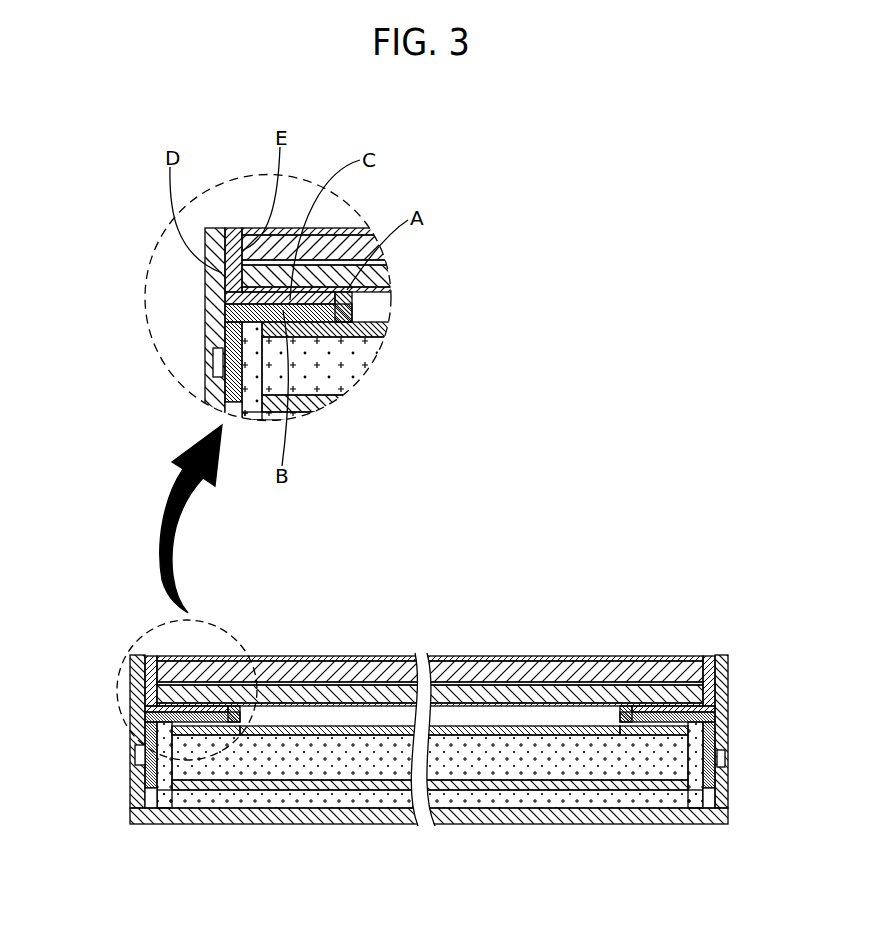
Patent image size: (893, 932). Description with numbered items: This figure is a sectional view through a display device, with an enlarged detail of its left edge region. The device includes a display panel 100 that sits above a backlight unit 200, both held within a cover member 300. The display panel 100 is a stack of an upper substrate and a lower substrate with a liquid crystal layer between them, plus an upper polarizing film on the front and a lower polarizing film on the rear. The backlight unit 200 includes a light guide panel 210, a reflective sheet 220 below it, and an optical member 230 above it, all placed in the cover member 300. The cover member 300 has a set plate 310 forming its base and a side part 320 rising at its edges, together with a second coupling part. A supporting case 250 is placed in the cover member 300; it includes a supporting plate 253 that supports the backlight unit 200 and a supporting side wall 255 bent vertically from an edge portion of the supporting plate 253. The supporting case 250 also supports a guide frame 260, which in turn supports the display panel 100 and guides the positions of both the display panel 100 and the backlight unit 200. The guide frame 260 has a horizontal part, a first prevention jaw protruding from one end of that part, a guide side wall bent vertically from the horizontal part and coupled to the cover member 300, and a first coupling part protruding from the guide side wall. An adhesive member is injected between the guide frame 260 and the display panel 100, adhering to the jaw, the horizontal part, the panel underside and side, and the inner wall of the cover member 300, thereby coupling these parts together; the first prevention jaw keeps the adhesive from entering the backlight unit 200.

The display panel 100 is at (430, 620).
The backlight unit 200 is at (430, 823).
The light guide panel 210 is at (382, 767).
The reflective sheet 220 is at (400, 793).
The optical member 230 is at (345, 737).
The supporting case 250 is at (430, 855).
The supporting plate 253 is at (232, 808).
The supporting side wall 255 is at (190, 808).
The guide frame 260 is at (369, 553).
The cover member 300 is at (473, 759).
The set plate 310 is at (697, 824).
The side part 320 is at (725, 800).